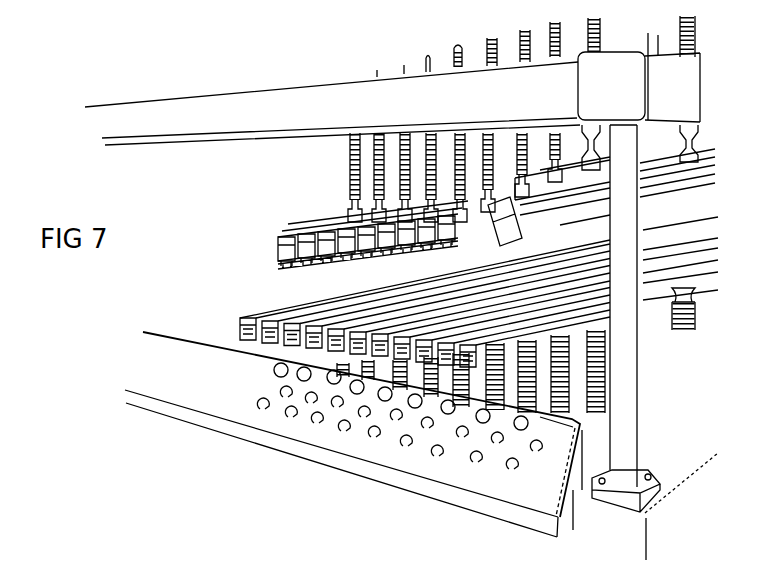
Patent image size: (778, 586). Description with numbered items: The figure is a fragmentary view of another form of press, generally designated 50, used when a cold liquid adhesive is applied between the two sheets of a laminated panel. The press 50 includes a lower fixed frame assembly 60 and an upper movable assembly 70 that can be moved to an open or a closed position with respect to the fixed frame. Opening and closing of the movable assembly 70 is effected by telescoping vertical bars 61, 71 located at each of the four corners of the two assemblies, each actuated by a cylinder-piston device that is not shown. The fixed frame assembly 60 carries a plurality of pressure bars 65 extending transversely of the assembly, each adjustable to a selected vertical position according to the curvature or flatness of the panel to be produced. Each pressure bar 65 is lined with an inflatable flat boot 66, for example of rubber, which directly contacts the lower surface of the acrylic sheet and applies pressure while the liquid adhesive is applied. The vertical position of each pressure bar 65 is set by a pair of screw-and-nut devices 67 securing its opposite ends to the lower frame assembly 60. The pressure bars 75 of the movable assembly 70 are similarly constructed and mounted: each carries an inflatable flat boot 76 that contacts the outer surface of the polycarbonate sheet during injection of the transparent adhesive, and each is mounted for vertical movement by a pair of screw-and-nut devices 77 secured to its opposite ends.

The press 50 is at (56, 331).
The lower fixed frame assembly 60 is at (185, 395).
The telescoping vertical bar 61 is at (625, 530).
The pressure bar 65 is at (265, 358).
The inflatable flat boot 66 is at (278, 314).
The screw-and-nut device 67 is at (696, 306).
The upper movable assembly 70 is at (200, 108).
The telescoping vertical bar 71 is at (632, 448).
The pressure bar 75 is at (289, 237).
The inflatable flat boot 76 is at (342, 255).
The screw-and-nut device 77 is at (351, 170).